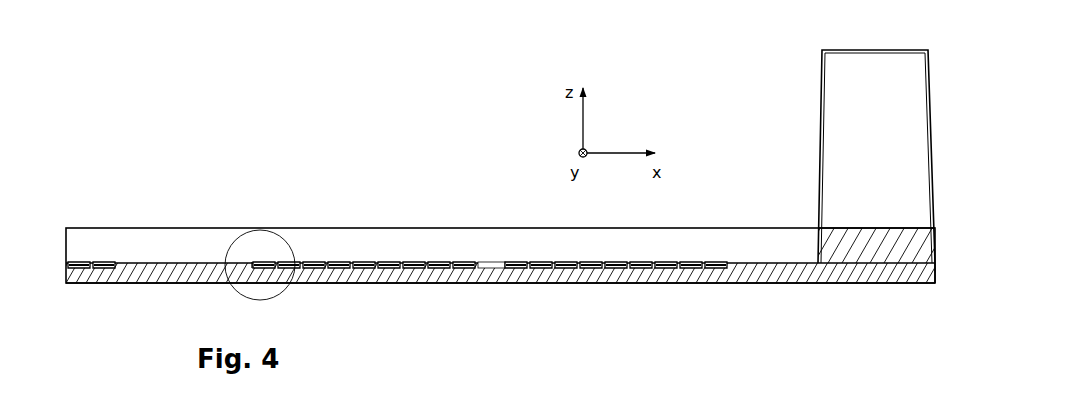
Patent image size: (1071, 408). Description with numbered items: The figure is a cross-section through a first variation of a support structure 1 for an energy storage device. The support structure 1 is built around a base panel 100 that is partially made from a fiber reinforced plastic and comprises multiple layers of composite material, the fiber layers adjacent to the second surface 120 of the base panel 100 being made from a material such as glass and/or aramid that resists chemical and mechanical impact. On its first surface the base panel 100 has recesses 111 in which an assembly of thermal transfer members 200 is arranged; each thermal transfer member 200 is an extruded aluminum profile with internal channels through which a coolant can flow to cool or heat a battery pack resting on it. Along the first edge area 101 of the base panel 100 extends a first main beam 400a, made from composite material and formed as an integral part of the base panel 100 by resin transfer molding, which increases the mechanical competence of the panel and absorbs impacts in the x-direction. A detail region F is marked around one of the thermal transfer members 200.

The support structure 1 is at (270, 92).
The base panel 100 is at (704, 287).
The first edge area 101 is at (935, 283).
The recesses 111 is at (252, 263).
The second surface 120 is at (530, 283).
The thermal transfer members 200 is at (88, 254).
The first main beam 400a is at (814, 58).
The detail region F is at (288, 242).